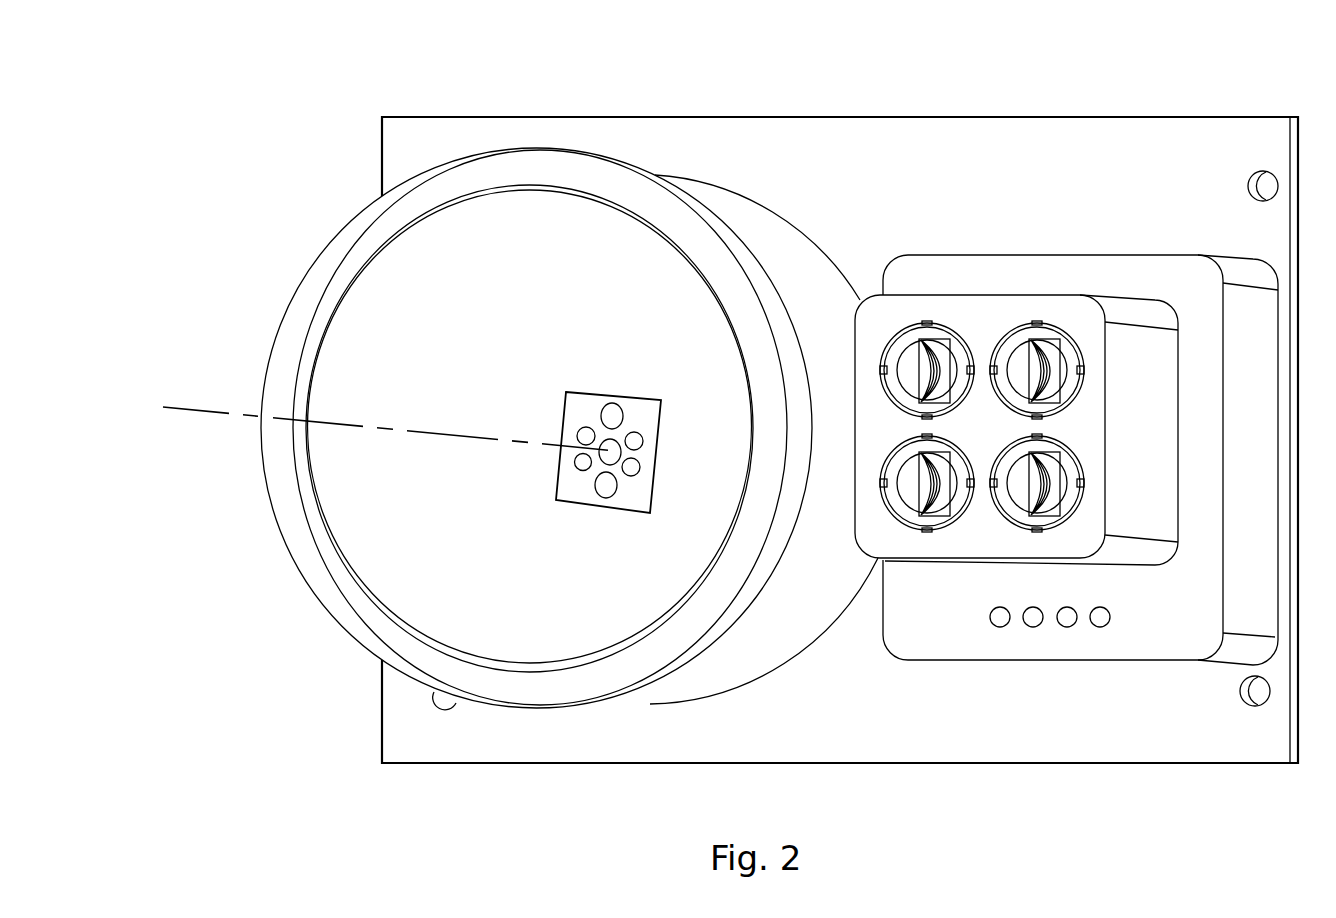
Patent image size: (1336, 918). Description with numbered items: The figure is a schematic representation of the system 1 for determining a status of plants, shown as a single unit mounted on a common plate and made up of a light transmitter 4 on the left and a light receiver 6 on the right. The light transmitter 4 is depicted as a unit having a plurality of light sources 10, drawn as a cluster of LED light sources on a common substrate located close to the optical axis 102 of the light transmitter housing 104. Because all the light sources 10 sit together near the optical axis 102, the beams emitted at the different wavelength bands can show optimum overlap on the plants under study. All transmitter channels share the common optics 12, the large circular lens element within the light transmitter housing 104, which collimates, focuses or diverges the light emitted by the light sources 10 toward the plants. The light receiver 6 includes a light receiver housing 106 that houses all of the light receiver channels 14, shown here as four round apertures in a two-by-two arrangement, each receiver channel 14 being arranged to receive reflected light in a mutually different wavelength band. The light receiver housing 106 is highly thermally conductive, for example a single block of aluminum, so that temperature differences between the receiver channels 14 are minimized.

The system 1 is at (1202, 94).
The light transmitter 4 is at (577, 106).
The light transmitter housing 104 is at (475, 148).
The optics 12 is at (485, 610).
The light source 10 is at (603, 492).
The optical axis 102 is at (194, 407).
The light receiver 6 is at (1038, 106).
The light receiver housing 106 is at (979, 308).
The receiver channels 14 is at (928, 520).